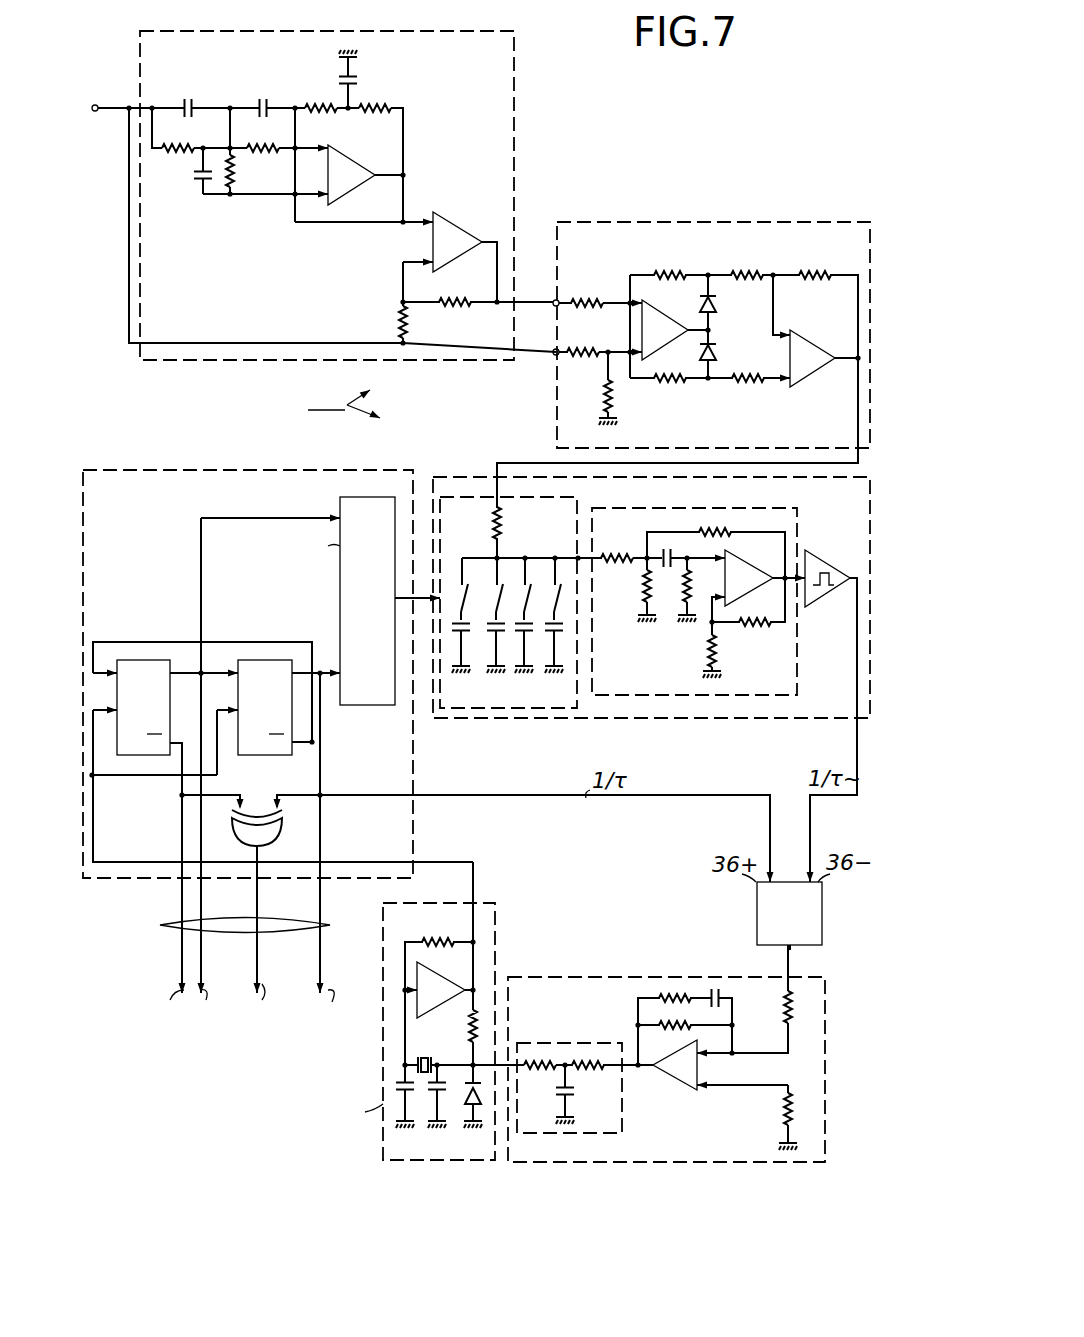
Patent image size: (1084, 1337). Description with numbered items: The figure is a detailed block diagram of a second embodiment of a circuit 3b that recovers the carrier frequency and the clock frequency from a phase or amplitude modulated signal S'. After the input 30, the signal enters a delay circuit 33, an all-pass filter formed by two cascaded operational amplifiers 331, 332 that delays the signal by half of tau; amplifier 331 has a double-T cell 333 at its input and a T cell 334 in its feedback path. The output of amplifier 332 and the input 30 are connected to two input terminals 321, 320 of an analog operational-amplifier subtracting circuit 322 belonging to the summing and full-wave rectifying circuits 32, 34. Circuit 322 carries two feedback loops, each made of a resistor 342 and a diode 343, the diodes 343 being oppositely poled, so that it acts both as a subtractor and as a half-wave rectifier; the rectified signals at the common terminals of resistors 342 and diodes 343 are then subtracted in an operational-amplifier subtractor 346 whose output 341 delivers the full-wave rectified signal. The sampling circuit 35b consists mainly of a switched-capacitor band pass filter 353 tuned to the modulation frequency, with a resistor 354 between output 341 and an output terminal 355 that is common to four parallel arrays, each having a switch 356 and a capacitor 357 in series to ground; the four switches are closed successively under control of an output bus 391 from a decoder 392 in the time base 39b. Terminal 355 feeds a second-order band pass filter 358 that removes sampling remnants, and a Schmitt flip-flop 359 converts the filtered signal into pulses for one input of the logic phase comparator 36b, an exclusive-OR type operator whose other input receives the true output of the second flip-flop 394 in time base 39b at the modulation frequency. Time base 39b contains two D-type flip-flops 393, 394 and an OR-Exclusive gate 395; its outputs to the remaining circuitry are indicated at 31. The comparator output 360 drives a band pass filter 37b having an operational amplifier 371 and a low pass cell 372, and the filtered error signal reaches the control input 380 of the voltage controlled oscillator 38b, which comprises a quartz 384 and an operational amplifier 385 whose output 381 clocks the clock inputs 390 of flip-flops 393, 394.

The input 30 is at (98, 104).
The time base output lines 31 is at (176, 928).
The delay circuit 33 is at (505, 115).
The double-T cell 333 is at (194, 125).
The T cell 334 is at (362, 100).
The operational amplifier 331 is at (350, 168).
The operational amplifier 332 is at (461, 232).
The input terminal 321 is at (554, 298).
The input terminal 320 is at (553, 354).
The summing circuit 32 is at (704, 235).
The full-wave rectifying circuit 34 is at (712, 348).
The resistor 342 is at (666, 399).
The subtracting circuit 322 is at (660, 326).
The diode 343 is at (712, 360).
The operational-amplifier subtractor 346 is at (810, 352).
The output 341 is at (536, 462).
The sampling circuit 35b is at (722, 742).
The switched-capacitor band pass filter 353 is at (446, 720).
The resistor 354 is at (502, 530).
The switch 356 is at (472, 582).
The capacitor 357 is at (478, 660).
The output terminal 355 is at (586, 558).
The second-order band pass filter 358 is at (792, 695).
The Schmitt flip-flop 359 is at (830, 566).
The time base 39b is at (228, 470).
The output bus 391 is at (417, 593).
The decoder 392 is at (364, 624).
The D-type flip-flop 393 is at (140, 660).
The D-type flip-flop 394 is at (264, 755).
The clock input 390 is at (239, 706).
The OR-Exclusive gate 395 is at (274, 832).
The recovery circuit 3b is at (344, 403).
The oscillator 38b is at (505, 906).
The output 381 is at (430, 862).
The operational amplifier 385 is at (450, 986).
The quartz 384 is at (433, 1057).
The band pass filter 37b is at (642, 977).
The low pass cell 372 is at (561, 1043).
The control input 380 is at (498, 1064).
The operational amplifier 371 is at (676, 1090).
The logic phase comparator 36b is at (733, 914).
The output 360 is at (800, 960).